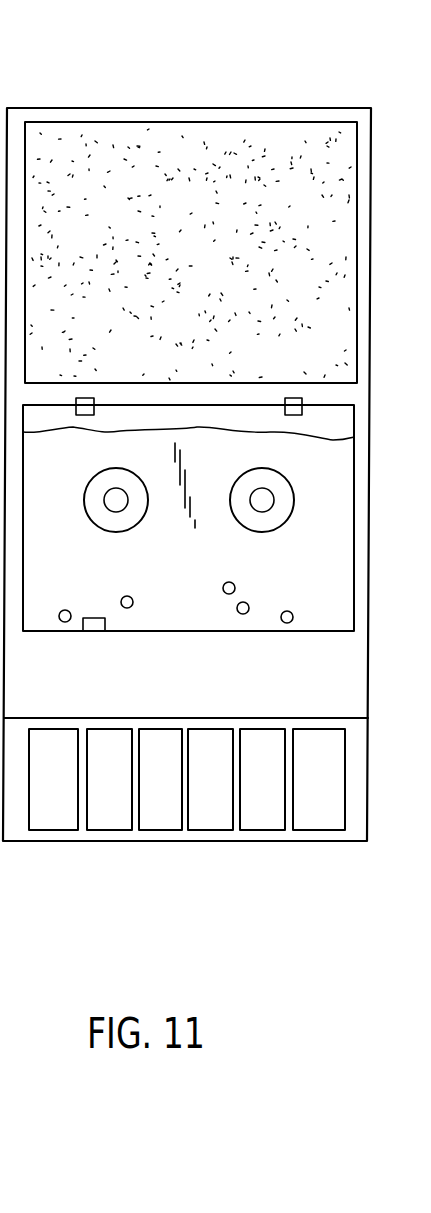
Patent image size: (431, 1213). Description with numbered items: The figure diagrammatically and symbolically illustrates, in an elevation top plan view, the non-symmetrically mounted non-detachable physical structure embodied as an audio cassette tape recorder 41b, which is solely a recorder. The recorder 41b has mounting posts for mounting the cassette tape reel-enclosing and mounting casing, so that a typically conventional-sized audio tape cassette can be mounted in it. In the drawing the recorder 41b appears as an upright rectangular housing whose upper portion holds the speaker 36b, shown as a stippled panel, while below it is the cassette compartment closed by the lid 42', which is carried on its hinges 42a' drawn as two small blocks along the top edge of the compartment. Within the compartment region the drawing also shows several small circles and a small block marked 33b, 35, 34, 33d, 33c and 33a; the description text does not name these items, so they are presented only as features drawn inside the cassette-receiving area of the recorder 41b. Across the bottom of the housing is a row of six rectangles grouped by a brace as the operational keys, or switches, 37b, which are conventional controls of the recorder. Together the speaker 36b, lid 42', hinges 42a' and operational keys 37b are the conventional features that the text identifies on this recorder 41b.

The audio cassette tape recorder 41b is at (130, 98).
The speaker 36b is at (224, 150).
The hinges 42a' is at (199, 377).
The lid 42' is at (188, 449).
The electrical contact 33b is at (95, 576).
The contact pad 35 is at (98, 618).
The electrical contact 34 is at (234, 583).
The electrical contact 33d is at (127, 608).
The electrical contact 33c is at (240, 614).
The electrical contact 33a is at (290, 623).
The operational keys (switches) 37b is at (310, 820).